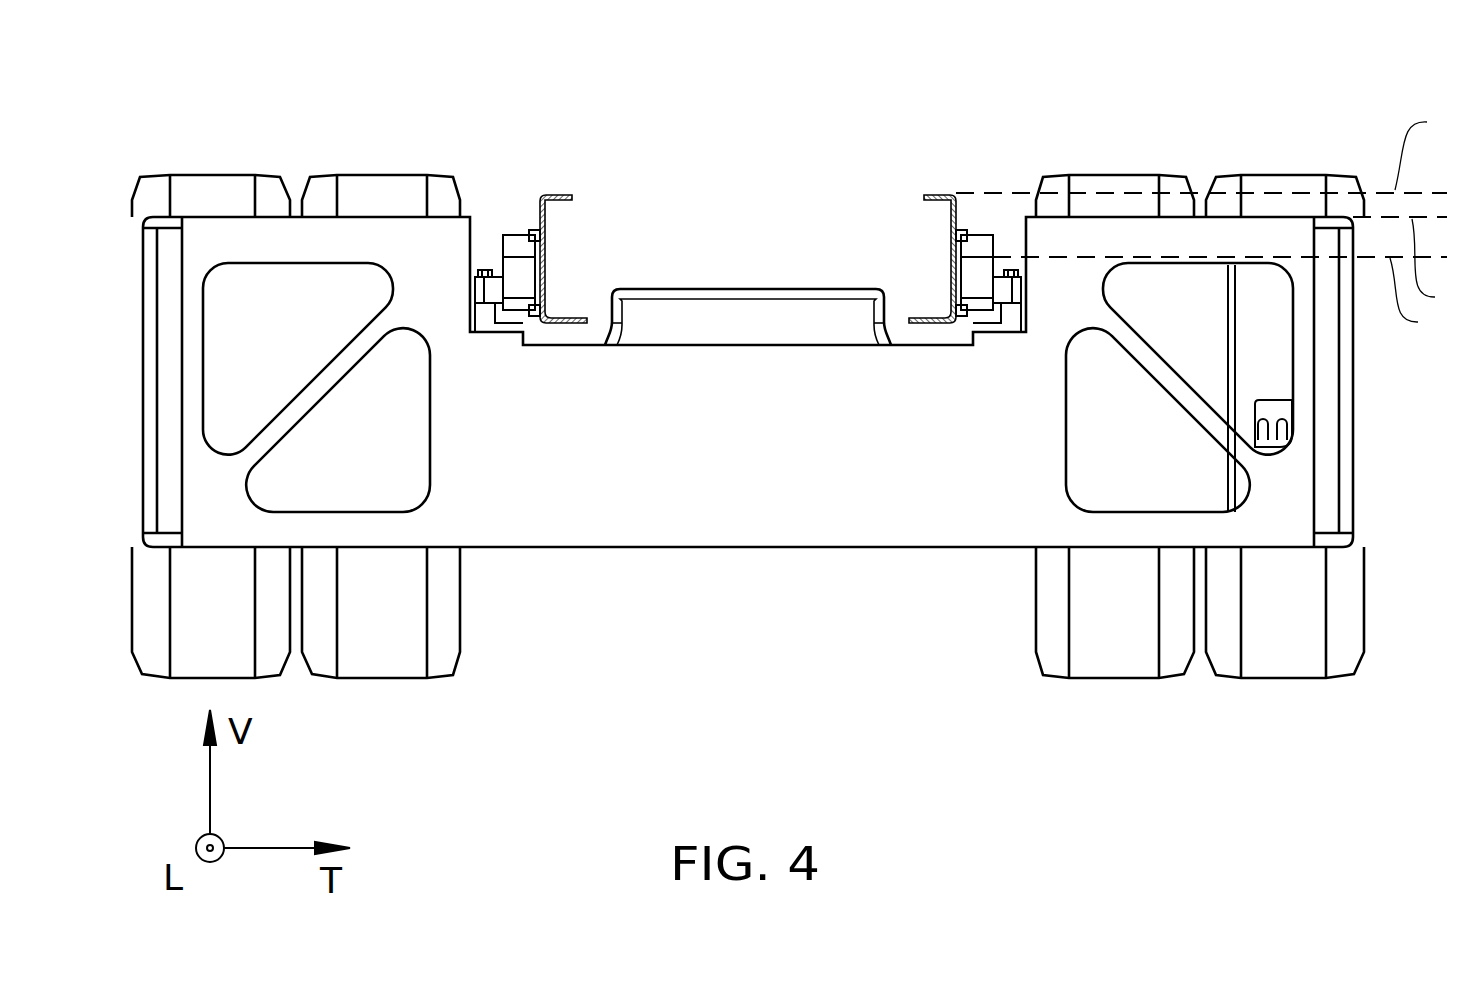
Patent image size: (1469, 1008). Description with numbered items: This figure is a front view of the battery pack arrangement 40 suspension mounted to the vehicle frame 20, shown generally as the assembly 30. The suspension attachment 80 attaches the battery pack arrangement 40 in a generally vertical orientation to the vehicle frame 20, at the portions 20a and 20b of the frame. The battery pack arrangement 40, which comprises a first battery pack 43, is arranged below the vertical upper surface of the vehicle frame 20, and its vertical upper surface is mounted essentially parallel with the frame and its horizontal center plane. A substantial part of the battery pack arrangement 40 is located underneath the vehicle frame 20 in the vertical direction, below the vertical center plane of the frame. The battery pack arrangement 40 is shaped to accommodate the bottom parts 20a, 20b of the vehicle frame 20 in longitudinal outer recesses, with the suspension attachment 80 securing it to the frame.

The bogie assembly 30 is at (783, 353).
The battery pack arrangement 40 is at (402, 257).
The first battery pack 43 is at (748, 335).
The suspension attachment 80 is at (515, 233).
The vehicle frame 20 is at (562, 192).
The bottom part of the vehicle frame 20a is at (571, 313).
The bottom part of the vehicle frame 20b is at (925, 313).